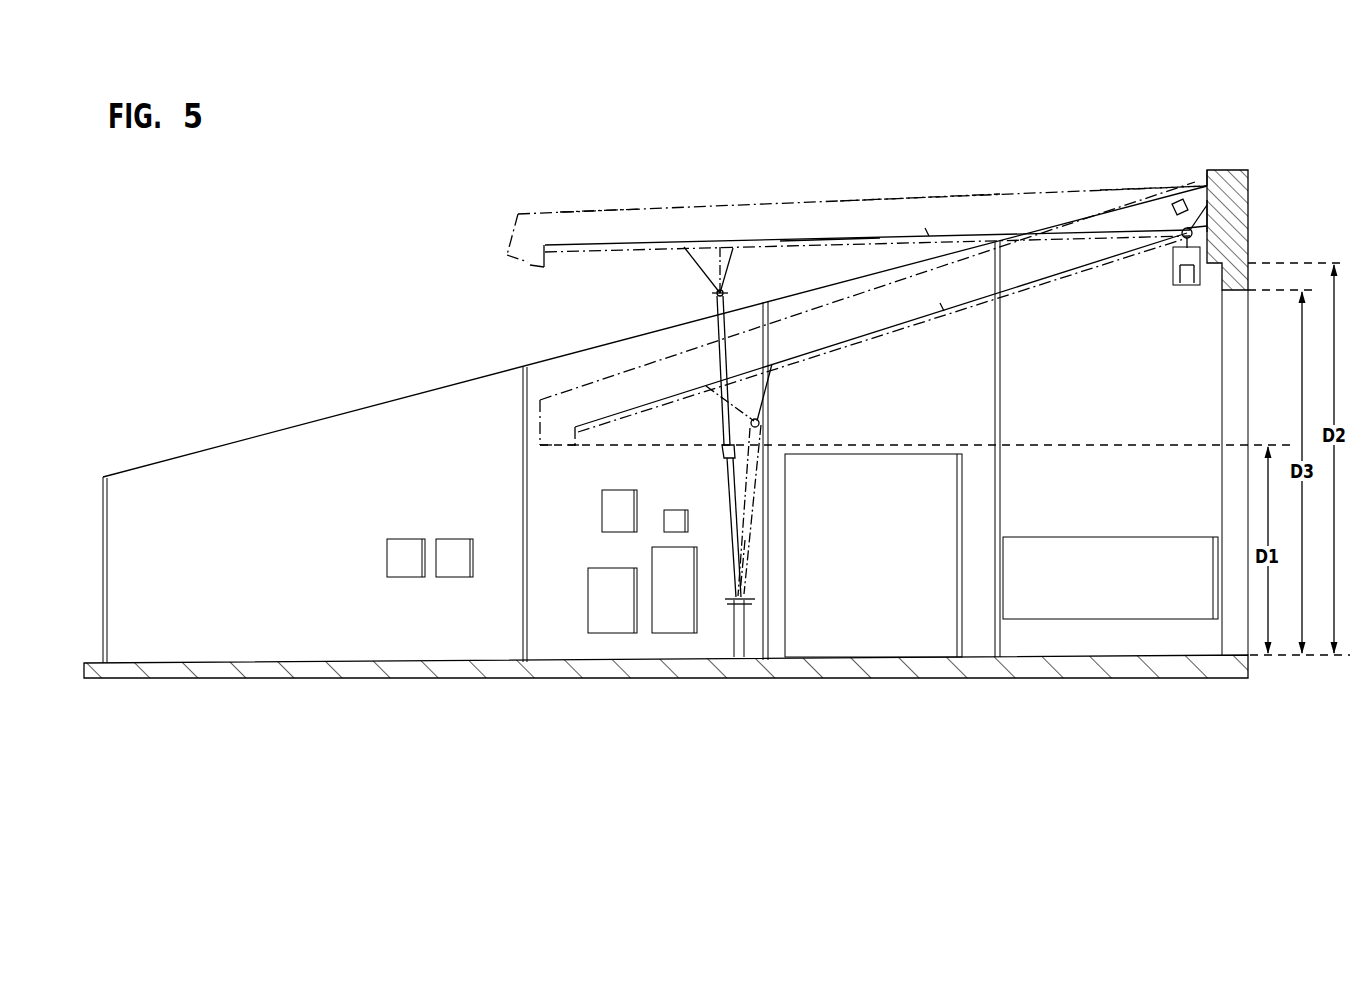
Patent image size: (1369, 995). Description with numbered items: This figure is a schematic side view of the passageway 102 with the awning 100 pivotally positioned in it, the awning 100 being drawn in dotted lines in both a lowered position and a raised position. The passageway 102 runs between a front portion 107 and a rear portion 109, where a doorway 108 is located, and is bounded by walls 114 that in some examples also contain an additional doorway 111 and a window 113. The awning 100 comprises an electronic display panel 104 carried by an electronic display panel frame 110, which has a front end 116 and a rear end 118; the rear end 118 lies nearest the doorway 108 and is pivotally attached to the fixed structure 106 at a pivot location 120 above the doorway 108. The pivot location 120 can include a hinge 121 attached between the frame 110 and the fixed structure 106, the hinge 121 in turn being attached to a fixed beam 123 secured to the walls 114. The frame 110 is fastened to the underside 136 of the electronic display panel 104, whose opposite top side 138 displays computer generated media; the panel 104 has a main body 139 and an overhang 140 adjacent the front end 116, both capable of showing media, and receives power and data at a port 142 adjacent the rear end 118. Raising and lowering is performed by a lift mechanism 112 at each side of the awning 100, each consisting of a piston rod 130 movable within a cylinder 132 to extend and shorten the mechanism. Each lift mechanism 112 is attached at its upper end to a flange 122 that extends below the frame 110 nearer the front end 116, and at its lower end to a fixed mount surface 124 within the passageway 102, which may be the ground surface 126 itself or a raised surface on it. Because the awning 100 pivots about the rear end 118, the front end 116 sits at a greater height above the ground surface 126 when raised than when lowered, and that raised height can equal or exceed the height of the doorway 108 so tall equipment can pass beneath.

The awning 100 is at (891, 118).
The passageway 102 is at (222, 408).
The electronic display panel 104 is at (705, 206).
The fixed structure 106 is at (1238, 180).
The front portion 107 is at (107, 463).
The doorway 108 is at (1235, 332).
The rear portion 109 is at (1212, 118).
The electronic display panel frame 110 is at (942, 307).
The additional doorway 111 is at (962, 603).
The lift mechanism 112 is at (753, 557).
The window 113 is at (1152, 618).
The wall 114 is at (343, 443).
The front end 116 is at (535, 192).
The rear end 118 is at (1159, 90).
The pivot location 120 is at (1203, 216).
The hinge 121 is at (1184, 230).
The flange 122 is at (733, 258).
The fixed beam 123 is at (1180, 273).
The fixed mount surface 124 is at (727, 607).
The ground surface 126 is at (432, 668).
The piston rod 130 is at (733, 520).
The cylinder 132 is at (720, 413).
The underside 136 is at (617, 231).
The top side 138 is at (570, 210).
The main body 139 is at (826, 220).
The overhang 140 is at (527, 250).
The port 142 is at (1182, 205).